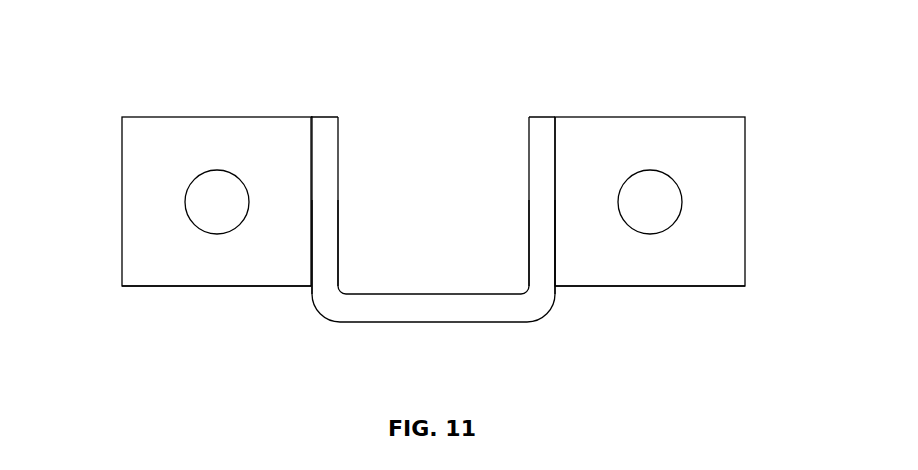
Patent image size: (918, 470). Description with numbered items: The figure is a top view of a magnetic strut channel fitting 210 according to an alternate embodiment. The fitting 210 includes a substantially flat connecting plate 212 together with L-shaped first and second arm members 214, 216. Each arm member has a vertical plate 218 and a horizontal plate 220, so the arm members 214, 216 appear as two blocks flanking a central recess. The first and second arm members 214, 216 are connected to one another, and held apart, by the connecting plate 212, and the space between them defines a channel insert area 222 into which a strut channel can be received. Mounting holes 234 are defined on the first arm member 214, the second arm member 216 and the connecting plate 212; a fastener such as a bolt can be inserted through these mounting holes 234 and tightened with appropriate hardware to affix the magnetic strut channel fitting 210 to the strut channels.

The magnetic strut channel fitting 210 is at (149, 46).
The connecting plate 212 is at (453, 310).
The first arm member 214 is at (175, 140).
The second arm member 216 is at (632, 140).
The vertical plate 218 is at (322, 223).
The horizontal plate 220 is at (207, 262).
The channel insert area 222 is at (415, 256).
The mounting holes 234 is at (193, 200).